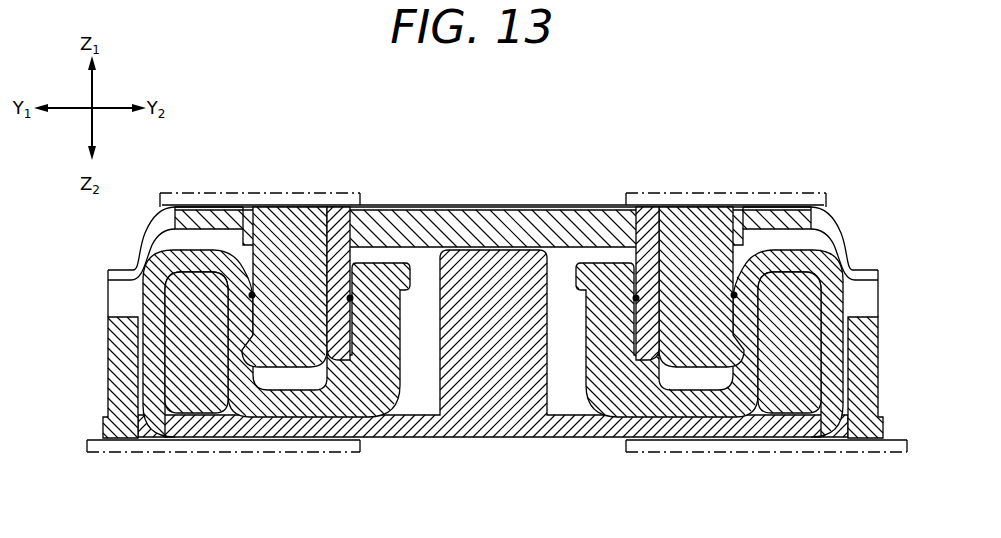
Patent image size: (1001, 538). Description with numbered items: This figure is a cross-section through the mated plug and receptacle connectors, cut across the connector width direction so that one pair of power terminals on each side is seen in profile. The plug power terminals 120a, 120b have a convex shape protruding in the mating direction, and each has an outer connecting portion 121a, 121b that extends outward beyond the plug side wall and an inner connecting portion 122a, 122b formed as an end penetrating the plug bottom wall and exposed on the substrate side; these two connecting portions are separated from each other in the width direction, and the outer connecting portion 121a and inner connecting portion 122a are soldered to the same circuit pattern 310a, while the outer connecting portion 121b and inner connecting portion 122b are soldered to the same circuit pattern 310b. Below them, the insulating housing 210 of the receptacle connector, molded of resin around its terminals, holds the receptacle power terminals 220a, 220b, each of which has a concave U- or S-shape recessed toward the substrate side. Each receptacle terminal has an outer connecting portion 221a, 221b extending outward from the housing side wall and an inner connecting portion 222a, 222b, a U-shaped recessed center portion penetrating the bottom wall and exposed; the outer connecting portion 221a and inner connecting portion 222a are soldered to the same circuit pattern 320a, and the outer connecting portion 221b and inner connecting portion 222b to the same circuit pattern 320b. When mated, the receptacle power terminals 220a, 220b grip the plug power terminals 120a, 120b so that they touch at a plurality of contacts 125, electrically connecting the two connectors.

The power terminal 120a is at (697, 205).
The power terminal 120b is at (290, 205).
The outer connecting portion 121a is at (787, 205).
The outer connecting portion 121b is at (188, 205).
The inner connecting portion 122a is at (648, 205).
The inner connecting portion 122b is at (336, 205).
The contact 125 is at (252, 296).
The housing 210 is at (187, 440).
The power terminal 220a is at (378, 437).
The power terminal 220b is at (612, 437).
The outer connecting portion 221a is at (113, 440).
The outer connecting portion 221b is at (875, 440).
The inner connecting portion 222a is at (272, 440).
The inner connecting portion 222b is at (716, 440).
The circuit pattern 310a is at (752, 193).
The circuit pattern 310b is at (259, 193).
The circuit pattern 320a is at (246, 452).
The circuit pattern 320b is at (737, 452).